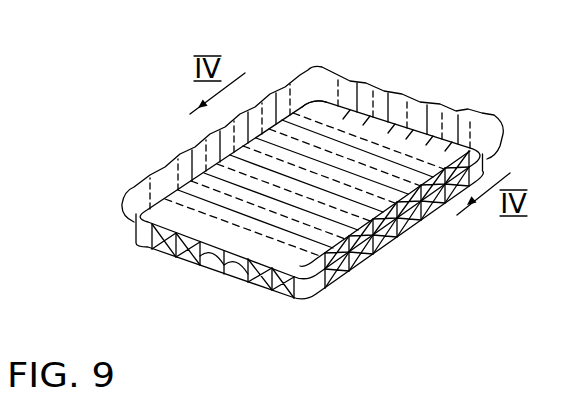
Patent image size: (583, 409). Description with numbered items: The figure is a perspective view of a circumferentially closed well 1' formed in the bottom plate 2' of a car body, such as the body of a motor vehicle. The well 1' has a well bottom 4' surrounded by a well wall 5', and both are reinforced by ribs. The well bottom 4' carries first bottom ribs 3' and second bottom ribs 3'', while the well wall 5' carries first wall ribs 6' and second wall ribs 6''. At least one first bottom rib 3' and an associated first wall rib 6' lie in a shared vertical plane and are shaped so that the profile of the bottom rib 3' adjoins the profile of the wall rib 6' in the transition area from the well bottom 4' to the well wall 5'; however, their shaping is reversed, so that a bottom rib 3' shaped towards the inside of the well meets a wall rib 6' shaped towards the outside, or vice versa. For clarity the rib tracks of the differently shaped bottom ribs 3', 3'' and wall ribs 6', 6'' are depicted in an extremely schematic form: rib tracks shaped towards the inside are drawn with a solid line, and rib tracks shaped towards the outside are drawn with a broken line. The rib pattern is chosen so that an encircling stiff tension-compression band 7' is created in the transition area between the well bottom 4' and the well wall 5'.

The well 1' is at (261, 200).
The bottom plate 2' is at (341, 144).
The first bottom rib 3' is at (324, 212).
The second bottom rib 3'' is at (338, 199).
The well bottom 4' is at (363, 184).
The well wall 5' is at (393, 82).
The first wall rib 6' is at (196, 146).
The second wall rib 6'' is at (355, 188).
The tension-compression band 7' is at (305, 63).